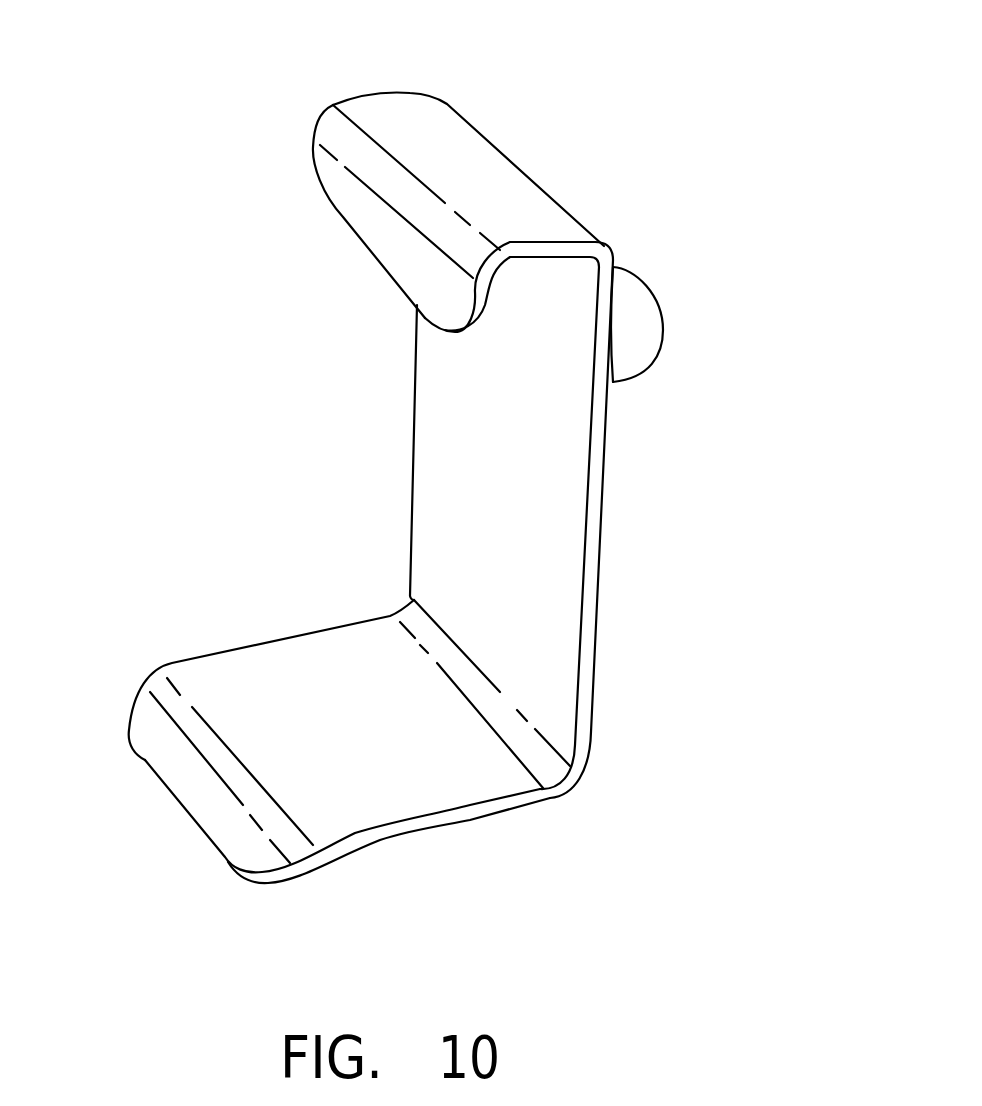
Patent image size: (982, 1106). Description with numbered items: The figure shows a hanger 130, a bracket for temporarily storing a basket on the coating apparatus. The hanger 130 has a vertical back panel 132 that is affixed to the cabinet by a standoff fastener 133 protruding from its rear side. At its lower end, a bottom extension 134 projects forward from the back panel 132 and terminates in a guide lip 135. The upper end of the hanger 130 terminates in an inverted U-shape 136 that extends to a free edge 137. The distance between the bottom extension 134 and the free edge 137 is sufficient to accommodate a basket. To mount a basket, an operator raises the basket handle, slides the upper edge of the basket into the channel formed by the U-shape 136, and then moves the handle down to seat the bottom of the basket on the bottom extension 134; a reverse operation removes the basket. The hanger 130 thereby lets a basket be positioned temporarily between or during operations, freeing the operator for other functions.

The basket hanger 130 is at (525, 158).
The vertical back panel 132 is at (487, 458).
The standoff fastener 133 is at (632, 305).
The bottom extension 134 is at (270, 683).
The guide lip 135 is at (167, 748).
The inverted U-shape 136 is at (363, 97).
The free edge 137 is at (367, 260).